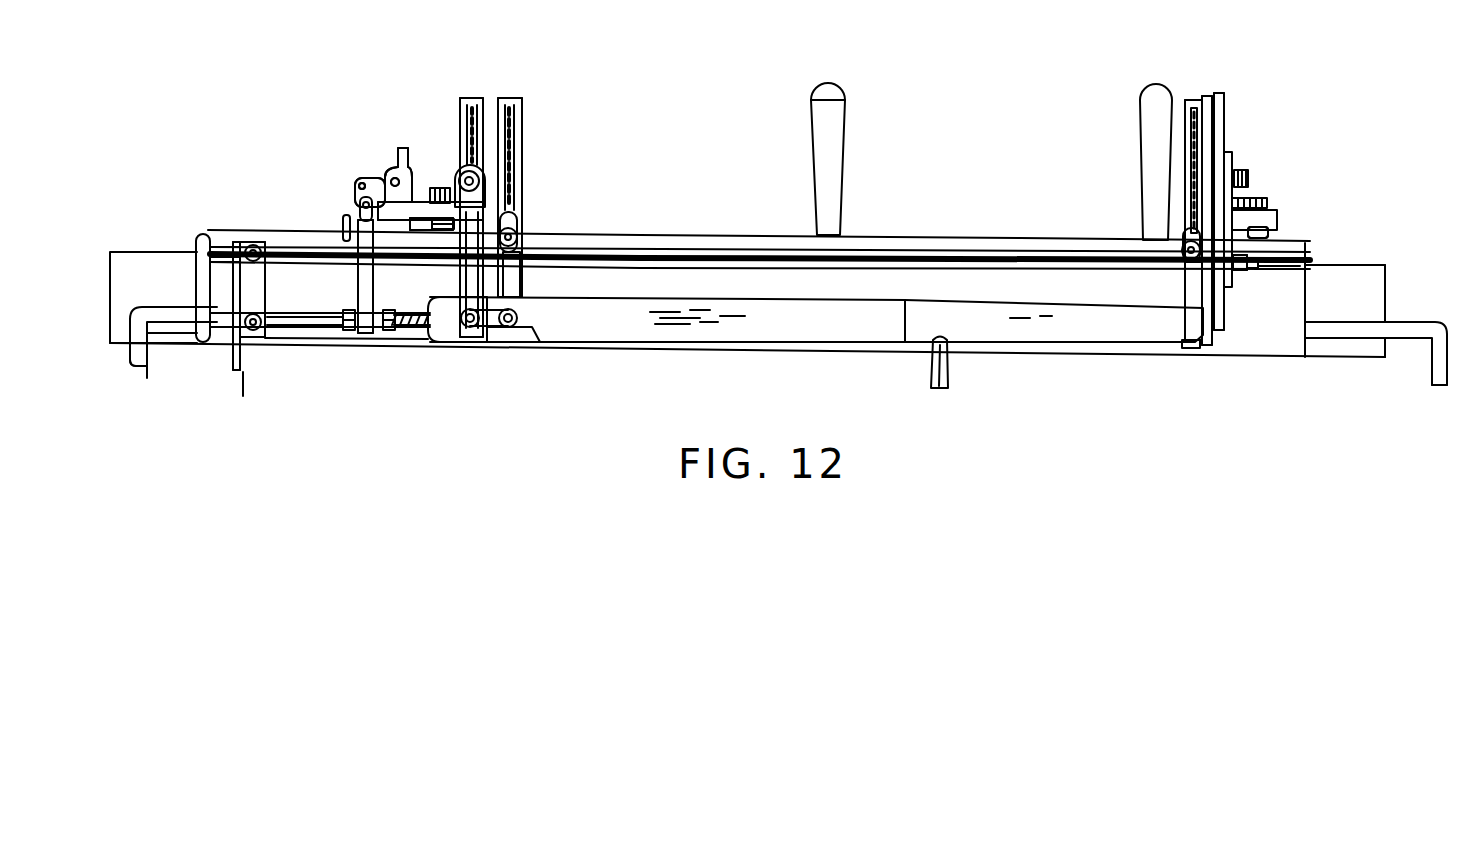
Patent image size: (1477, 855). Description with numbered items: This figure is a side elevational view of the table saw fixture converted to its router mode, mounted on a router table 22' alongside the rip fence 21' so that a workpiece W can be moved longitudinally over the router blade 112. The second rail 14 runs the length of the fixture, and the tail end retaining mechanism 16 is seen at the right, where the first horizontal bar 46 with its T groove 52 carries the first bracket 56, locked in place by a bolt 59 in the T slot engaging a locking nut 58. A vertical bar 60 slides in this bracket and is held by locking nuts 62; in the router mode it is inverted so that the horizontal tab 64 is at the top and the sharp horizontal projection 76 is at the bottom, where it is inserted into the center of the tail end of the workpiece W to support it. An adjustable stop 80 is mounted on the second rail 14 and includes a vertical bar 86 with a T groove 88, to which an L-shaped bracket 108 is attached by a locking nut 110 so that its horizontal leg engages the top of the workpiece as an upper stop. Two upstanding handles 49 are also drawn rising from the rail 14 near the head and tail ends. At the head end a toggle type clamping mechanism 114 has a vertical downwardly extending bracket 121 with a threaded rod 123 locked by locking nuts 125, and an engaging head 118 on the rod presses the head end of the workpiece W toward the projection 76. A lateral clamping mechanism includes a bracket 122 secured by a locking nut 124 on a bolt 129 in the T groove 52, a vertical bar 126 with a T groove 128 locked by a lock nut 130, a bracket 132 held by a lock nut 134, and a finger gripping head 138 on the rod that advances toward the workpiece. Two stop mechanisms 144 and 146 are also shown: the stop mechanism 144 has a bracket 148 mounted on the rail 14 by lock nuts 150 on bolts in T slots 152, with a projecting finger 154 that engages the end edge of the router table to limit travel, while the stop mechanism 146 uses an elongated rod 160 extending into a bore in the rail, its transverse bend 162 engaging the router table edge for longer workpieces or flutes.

The second rail 14 is at (934, 221).
The tail end retaining mechanism 16 is at (1305, 247).
The rip fence 21' is at (1376, 284).
The router table 22' is at (160, 353).
The first horizontal bar 46 is at (1267, 240).
The handle 49 is at (828, 188).
The T groove 52 is at (444, 230).
The first bracket 56 is at (1258, 222).
The locking nut 58 is at (1258, 200).
The bolt 59 is at (1256, 229).
The vertical bar 60 is at (1222, 100).
The locking nuts 62 is at (1244, 170).
The horizontal tab 64 is at (1206, 96).
The sharp horizontal projection 76 is at (1180, 346).
The adjustable stop 80 is at (552, 148).
The vertical bar 86 is at (520, 215).
The T groove 88 is at (520, 98).
The L-shaped bracket 108 is at (518, 286).
The locking nut 110 is at (516, 236).
The router blade 112 is at (934, 368).
The toggle type clamping mechanism 114 is at (368, 142).
The engaging head 118 is at (428, 340).
The vertical downwardly extending bracket 121 is at (362, 278).
The bracket 122 is at (385, 180).
The threaded rod 123 is at (400, 328).
The locking nut 124 is at (437, 186).
The locking nuts 125 is at (357, 326).
The vertical bar 126 is at (465, 98).
The T groove 128 is at (480, 98).
The bolt 129 is at (452, 216).
The lock nut 130 is at (476, 176).
The bracket 132 is at (493, 327).
The lock nut 134 is at (470, 327).
The finger gripping head 138 is at (518, 327).
The stop mechanism 144 is at (276, 360).
The stop mechanism 146 is at (182, 392).
The bracket 148 is at (250, 283).
The lock nuts 150 is at (256, 250).
The T slots 152 is at (222, 248).
The projecting finger 154 is at (232, 350).
The elongated rod 160 is at (162, 305).
The transverse bend 162 is at (138, 368).
The workpiece W is at (690, 335).